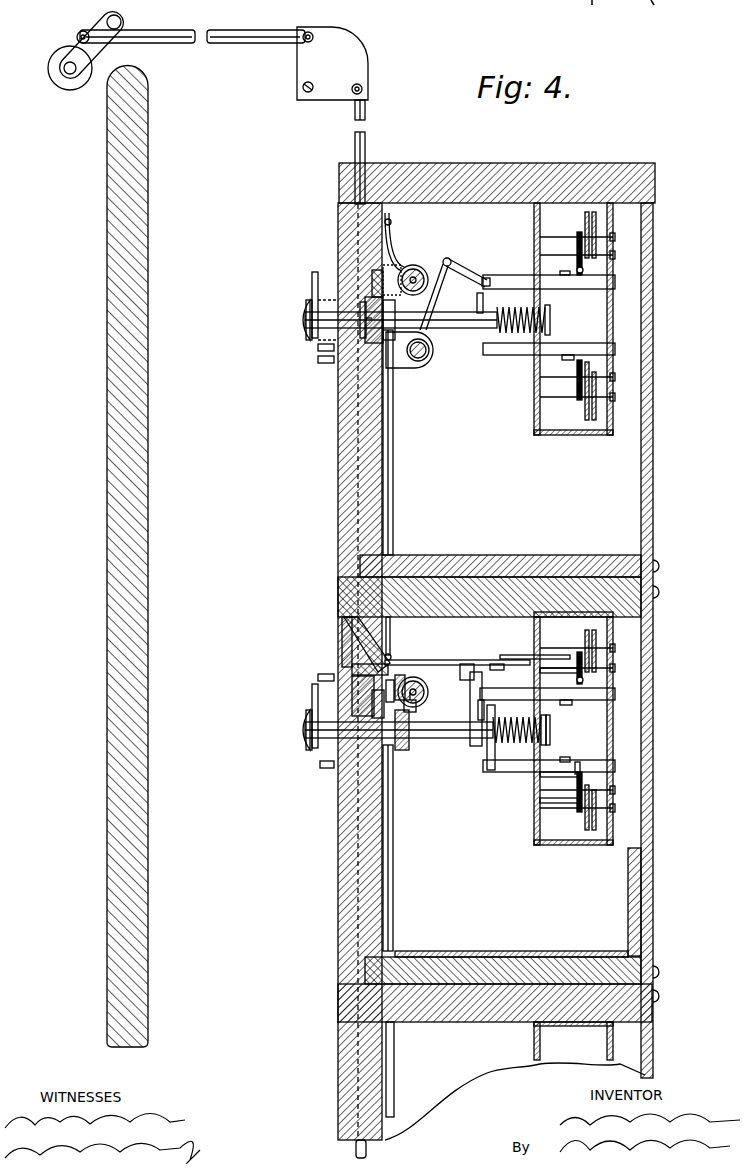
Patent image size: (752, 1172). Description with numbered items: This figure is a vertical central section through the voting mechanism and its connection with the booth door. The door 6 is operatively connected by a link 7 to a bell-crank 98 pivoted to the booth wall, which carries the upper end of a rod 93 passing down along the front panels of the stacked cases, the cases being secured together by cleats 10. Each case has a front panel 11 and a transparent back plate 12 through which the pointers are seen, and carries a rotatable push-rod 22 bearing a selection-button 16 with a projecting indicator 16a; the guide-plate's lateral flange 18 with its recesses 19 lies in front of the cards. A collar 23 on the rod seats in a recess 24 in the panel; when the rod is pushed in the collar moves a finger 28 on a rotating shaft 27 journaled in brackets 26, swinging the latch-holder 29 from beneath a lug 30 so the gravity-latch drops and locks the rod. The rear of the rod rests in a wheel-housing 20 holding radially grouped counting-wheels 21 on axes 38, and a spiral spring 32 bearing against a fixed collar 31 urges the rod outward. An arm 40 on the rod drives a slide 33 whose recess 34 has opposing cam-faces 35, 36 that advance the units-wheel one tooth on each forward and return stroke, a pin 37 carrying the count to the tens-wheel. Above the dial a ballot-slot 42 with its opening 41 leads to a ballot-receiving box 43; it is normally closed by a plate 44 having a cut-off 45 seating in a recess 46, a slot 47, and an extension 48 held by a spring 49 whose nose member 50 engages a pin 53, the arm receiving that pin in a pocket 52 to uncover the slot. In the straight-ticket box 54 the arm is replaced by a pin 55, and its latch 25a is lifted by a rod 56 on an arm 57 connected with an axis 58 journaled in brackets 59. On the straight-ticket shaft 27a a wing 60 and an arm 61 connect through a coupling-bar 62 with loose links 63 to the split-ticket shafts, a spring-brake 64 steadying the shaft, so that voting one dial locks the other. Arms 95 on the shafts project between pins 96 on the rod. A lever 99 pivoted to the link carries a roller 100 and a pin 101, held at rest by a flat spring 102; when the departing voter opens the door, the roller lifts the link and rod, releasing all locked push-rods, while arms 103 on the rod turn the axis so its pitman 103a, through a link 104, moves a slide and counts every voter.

The door 6 is at (106, 444).
The link 7 is at (181, 44).
The cleats 10 is at (658, 556).
The front panel 11 is at (337, 502).
The glass plate 12 is at (654, 310).
The selection-button 16 is at (300, 320).
The indicator 16a is at (311, 283).
The lateral flange 18 is at (322, 364).
The recesses 19 is at (317, 348).
The wheel-housing 20 is at (613, 325).
The counting-wheels 21 is at (585, 220).
The push-rod 22 is at (470, 330).
The collar 23 is at (392, 345).
The recess 24 is at (366, 300).
The gravity-latch 25a is at (410, 264).
The brackets 26 is at (420, 680).
The rotating shaft 27 is at (428, 692).
The shaft 27a is at (450, 260).
The fingers 28 is at (418, 708).
The latch-holder 29 is at (398, 714).
The lug 30 is at (398, 681).
The fixed collar 31 is at (486, 750).
The spiral spring 32 is at (530, 737).
The slides 33 is at (560, 355).
The recess 34 is at (568, 774).
The cam-face 35 is at (563, 760).
The cam-face 36 is at (578, 766).
The pin 37 is at (584, 266).
The axes 38 is at (572, 655).
The arm 40 is at (483, 690).
The opening 41 is at (338, 615).
The ballot-slot 42 is at (352, 630).
The ballot-receiving box 43 is at (511, 926).
The plate 44 is at (380, 650).
The cut-off 45 is at (345, 680).
The recess 46 is at (352, 668).
The slot 47 is at (401, 676).
The extension 48 is at (462, 669).
The spring 49 is at (505, 657).
The nose member 50 is at (500, 668).
The pocket 52 is at (472, 695).
The pin 53 is at (470, 663).
The box 54 is at (423, 418).
The pin 55 is at (476, 299).
The rod 56 is at (395, 318).
The arm 57 is at (394, 398).
The axis 58 is at (426, 354).
The brackets 59 is at (422, 360).
The wing 60 is at (396, 272).
The arm 61 is at (425, 271).
The coupling-bar 62 is at (394, 428).
The loose links 63 is at (391, 632).
The spring-brake 64 is at (409, 235).
The rod 93 is at (368, 144).
The arms 95 is at (402, 688).
The pins 96 is at (372, 286).
The bell-crank 98 is at (332, 63).
The lever 99 is at (84, 18).
The roller 100 is at (56, 80).
The pin 101 is at (124, 23).
The flat spring 102 is at (76, 37).
The arms 103 is at (345, 375).
The pitman 103a is at (484, 284).
The link 104 is at (470, 274).